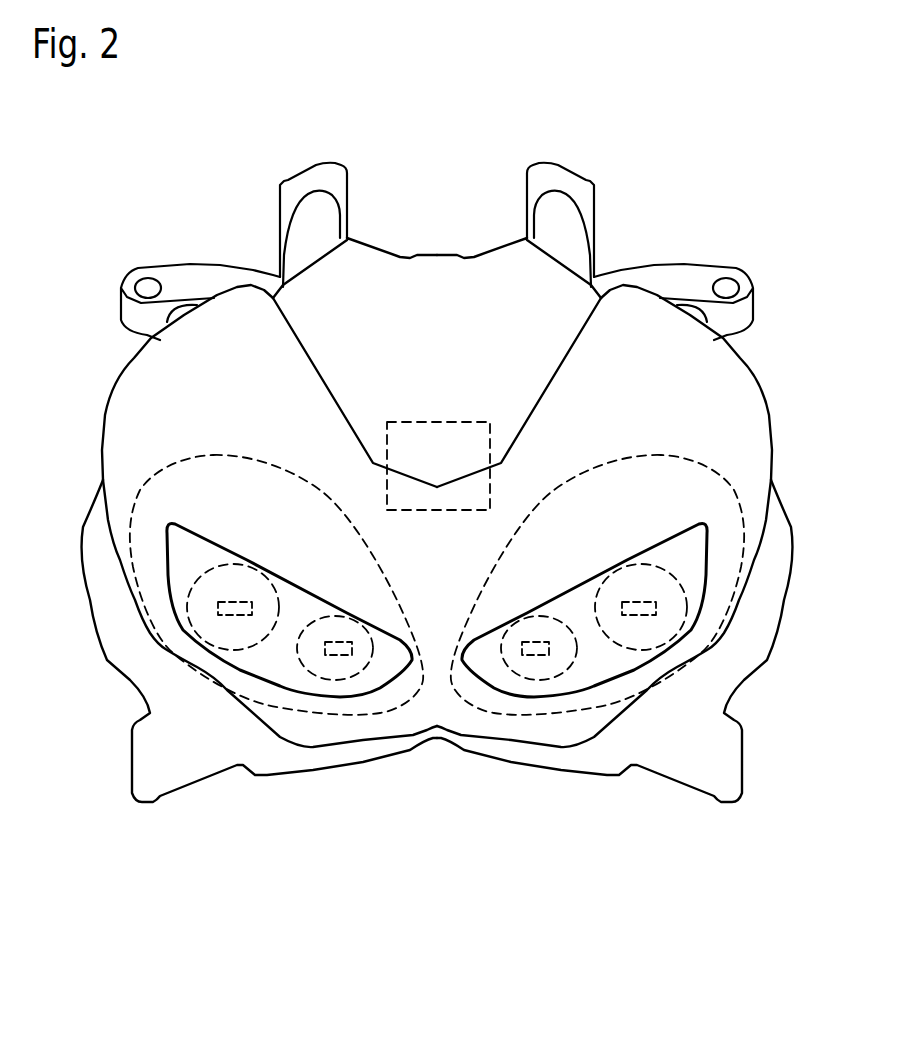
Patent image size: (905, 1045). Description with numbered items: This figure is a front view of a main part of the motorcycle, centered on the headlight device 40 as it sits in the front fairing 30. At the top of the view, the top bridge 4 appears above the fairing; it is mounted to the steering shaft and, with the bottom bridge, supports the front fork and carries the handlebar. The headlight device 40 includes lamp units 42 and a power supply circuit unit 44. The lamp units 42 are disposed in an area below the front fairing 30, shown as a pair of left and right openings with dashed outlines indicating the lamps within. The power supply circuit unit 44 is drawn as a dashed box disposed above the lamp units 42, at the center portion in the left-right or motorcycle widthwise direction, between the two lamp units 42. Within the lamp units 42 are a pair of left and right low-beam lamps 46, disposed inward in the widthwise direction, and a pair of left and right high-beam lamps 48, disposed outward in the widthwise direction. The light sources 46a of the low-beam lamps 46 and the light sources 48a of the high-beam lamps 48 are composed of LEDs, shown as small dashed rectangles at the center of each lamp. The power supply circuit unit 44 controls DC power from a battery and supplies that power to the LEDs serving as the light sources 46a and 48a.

The top bridge 4 is at (693, 275).
The front fairing 30 is at (732, 383).
The headlight device 40 is at (437, 647).
The lamp units 42 is at (378, 717).
The power supply circuit unit 44 is at (438, 512).
The low-beam lamps 46 is at (332, 680).
The light source of low-beam lamp 46a is at (325, 656).
The high-beam lamps 48 is at (236, 652).
The light source of high-beam lamp 48a is at (232, 616).